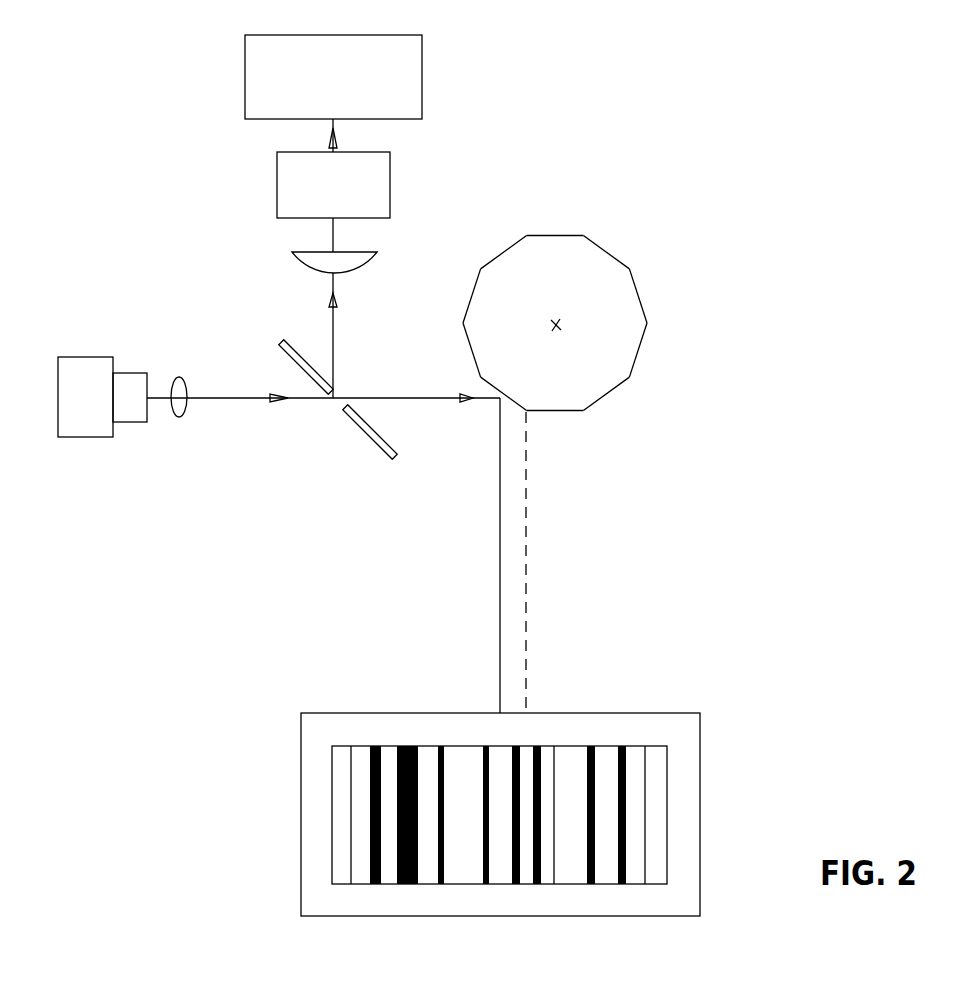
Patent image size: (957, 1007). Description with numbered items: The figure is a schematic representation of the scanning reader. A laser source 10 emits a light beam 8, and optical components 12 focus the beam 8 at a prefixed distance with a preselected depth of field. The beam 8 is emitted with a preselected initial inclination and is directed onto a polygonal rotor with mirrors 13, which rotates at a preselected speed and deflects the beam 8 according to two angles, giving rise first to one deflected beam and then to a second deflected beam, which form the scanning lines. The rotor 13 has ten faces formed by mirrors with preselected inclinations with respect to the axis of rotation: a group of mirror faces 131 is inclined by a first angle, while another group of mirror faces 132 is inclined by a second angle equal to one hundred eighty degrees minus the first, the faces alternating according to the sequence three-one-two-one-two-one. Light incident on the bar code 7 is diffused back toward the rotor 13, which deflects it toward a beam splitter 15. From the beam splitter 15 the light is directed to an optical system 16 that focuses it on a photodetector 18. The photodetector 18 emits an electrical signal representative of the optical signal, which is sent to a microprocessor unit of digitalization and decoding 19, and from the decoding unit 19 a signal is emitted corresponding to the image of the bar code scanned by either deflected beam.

The bar code 7 is at (673, 767).
The light beam 8 is at (245, 400).
The laser source 10 is at (83, 425).
The optical components 12 is at (180, 410).
The polygonal rotor with mirrors 13 is at (555, 283).
The beam splitter 15 is at (292, 367).
The optical system 16 is at (310, 268).
The photodetector 18 is at (277, 188).
The microprocessor unit of digitalization and decoding 19 is at (245, 78).
The mirror faces 131 is at (548, 235).
The mirror faces 132 is at (492, 261).